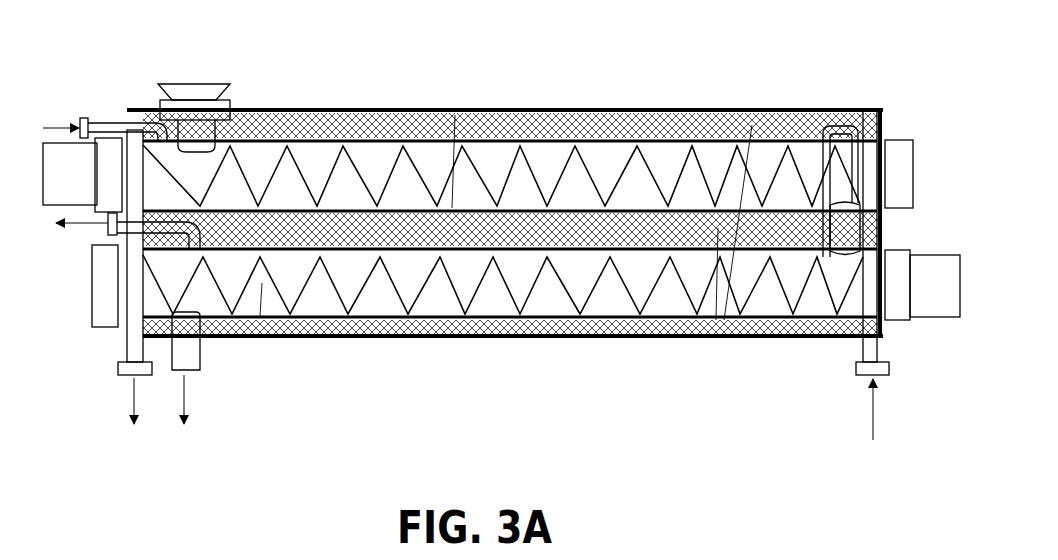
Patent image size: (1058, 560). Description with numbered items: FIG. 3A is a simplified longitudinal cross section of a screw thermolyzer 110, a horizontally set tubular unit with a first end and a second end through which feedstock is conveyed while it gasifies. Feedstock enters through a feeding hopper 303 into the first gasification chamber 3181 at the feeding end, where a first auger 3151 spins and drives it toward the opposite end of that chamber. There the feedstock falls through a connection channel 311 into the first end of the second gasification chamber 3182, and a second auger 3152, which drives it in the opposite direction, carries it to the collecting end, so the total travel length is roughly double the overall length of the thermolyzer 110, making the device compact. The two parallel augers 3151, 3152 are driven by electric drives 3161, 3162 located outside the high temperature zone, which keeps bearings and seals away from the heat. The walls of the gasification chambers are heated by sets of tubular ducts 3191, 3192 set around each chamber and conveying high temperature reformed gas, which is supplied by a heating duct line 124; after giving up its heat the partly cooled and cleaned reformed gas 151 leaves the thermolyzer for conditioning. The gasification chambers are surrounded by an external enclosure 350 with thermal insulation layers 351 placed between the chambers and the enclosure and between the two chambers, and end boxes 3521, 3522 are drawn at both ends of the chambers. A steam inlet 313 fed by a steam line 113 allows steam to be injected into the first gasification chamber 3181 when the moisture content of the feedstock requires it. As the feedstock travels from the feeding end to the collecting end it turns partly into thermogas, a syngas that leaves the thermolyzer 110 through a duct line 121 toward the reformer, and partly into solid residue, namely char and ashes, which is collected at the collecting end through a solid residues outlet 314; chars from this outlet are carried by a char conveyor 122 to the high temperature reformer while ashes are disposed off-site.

The screw thermolyzer 110 is at (808, 72).
The steam line 113 is at (48, 127).
The duct line 121 is at (91, 223).
The char conveyor 122 is at (187, 380).
The heating duct line 124 is at (876, 410).
The partly cooled and cleaned reformed gas 151 is at (132, 387).
The feeding hopper 303 is at (219, 86).
The connection channel 311 is at (840, 228).
The steam inlet 313 is at (108, 122).
The solid residues outlet 314 is at (198, 338).
The first auger 3151 is at (648, 164).
The second auger 3152 is at (565, 287).
The first electric drive 3161 is at (501, 230).
The second electric drive 3162 is at (935, 286).
The first gasification chamber 3181 is at (317, 175).
The second gasification chamber 3182 is at (264, 290).
The first set of tubular ducts 3191 is at (410, 140).
The second set of tubular ducts 3192 is at (657, 212).
The external enclosure 350 is at (546, 108).
The thermal insulation layers 351 is at (716, 320).
The first header 3521 is at (504, 175).
The second header 3522 is at (501, 286).